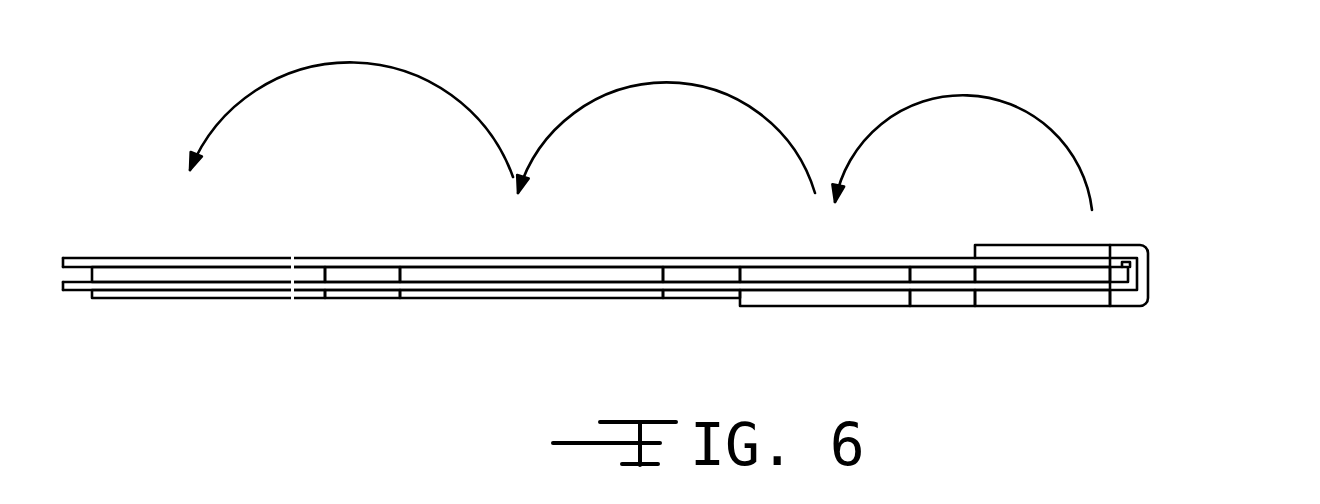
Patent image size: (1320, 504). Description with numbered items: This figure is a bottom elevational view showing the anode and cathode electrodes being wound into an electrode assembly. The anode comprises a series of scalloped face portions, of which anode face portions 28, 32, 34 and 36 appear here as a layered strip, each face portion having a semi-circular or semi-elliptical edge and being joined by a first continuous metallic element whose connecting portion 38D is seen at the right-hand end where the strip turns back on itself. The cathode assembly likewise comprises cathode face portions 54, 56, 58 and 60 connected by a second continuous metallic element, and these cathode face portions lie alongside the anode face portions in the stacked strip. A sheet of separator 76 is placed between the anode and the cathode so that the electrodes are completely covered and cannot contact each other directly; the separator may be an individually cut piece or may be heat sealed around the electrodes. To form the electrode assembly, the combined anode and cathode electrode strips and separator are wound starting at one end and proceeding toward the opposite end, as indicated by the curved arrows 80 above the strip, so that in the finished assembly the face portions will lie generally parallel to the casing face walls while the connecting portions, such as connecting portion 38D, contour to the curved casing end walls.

The anode face portion 28 is at (168, 299).
The anode face portion 32 is at (505, 298).
The anode face portion 34 is at (1027, 298).
The anode face portion 36 is at (1090, 247).
The connecting portion 38D is at (1150, 277).
The cathode face portion 54 is at (187, 275).
The cathode face portion 56 is at (557, 275).
The cathode face portion 58 is at (843, 272).
The cathode face portion 60 is at (1091, 275).
The separator 76 is at (1148, 260).
The arrows 80 is at (453, 90).